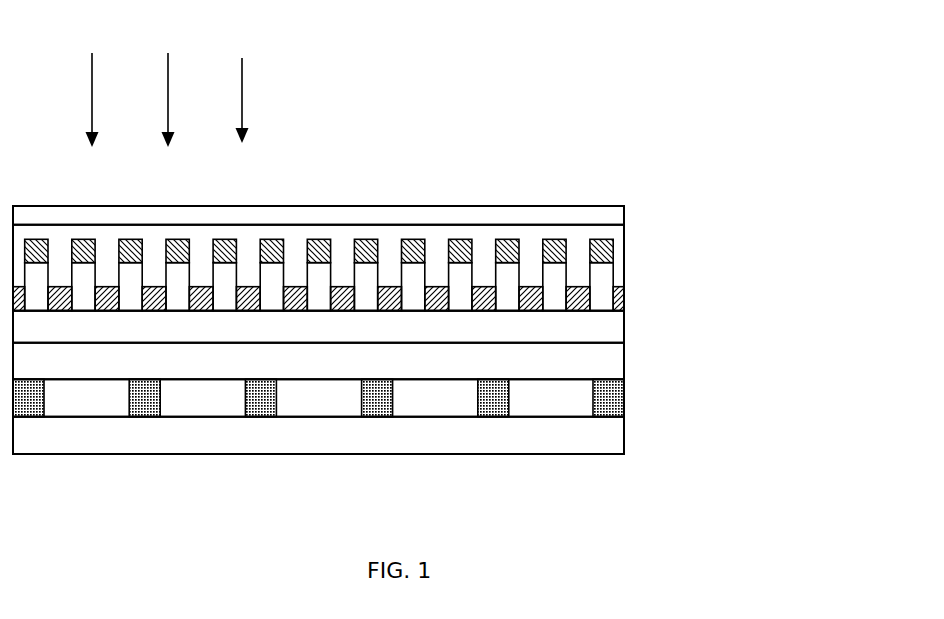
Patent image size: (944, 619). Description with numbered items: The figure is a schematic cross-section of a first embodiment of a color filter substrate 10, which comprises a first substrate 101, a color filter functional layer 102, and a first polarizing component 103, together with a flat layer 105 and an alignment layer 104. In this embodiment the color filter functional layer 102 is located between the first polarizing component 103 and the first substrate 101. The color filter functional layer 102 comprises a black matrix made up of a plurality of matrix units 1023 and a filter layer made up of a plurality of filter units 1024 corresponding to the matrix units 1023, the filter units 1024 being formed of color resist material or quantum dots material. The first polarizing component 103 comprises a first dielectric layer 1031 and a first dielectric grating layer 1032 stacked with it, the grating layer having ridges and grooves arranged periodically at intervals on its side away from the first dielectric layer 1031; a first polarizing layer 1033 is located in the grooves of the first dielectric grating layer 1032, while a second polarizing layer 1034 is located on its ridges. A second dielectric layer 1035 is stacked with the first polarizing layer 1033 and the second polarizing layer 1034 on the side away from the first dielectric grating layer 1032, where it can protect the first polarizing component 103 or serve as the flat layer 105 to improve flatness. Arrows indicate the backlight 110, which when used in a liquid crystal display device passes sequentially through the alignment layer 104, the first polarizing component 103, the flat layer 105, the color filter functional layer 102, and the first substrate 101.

The color filter substrate 10 is at (410, 130).
The backlight 110 is at (167, 82).
The alignment layer 104 is at (472, 213).
The first polarizing component 103 is at (775, 207).
The second dielectric layer 1035 is at (617, 233).
The second polarizing layer 1034 is at (610, 243).
The first dielectric grating layer 1032 is at (600, 270).
The first polarizing layer 1033 is at (625, 292).
The first dielectric layer 1031 is at (602, 333).
The flat layer 105 is at (608, 368).
The color filter functional layer 102 is at (710, 533).
The matrix units 1023 is at (625, 402).
The filter units 1024 is at (545, 398).
The first substrate 101 is at (440, 432).